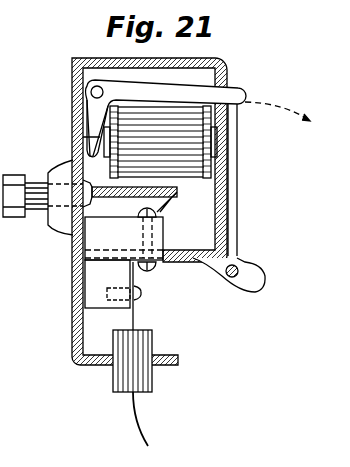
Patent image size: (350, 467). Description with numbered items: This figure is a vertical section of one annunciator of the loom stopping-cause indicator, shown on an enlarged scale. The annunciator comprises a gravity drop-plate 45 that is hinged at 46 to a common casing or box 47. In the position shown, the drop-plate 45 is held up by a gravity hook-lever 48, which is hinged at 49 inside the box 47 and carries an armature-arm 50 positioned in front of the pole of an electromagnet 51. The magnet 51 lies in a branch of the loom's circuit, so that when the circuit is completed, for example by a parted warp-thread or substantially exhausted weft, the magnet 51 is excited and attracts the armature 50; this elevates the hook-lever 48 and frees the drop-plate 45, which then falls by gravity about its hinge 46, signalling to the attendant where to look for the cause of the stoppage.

The gravity drop-plate 45 is at (237, 208).
The hinge 46 is at (229, 279).
The casing or box 47 is at (73, 280).
The gravity hook-lever 48 is at (188, 95).
The hinge 49 is at (90, 93).
The armature-arm 50 is at (83, 137).
The electromagnet 51 is at (160, 142).